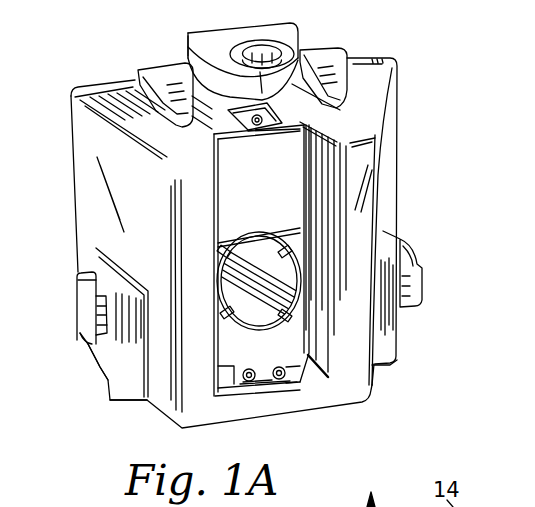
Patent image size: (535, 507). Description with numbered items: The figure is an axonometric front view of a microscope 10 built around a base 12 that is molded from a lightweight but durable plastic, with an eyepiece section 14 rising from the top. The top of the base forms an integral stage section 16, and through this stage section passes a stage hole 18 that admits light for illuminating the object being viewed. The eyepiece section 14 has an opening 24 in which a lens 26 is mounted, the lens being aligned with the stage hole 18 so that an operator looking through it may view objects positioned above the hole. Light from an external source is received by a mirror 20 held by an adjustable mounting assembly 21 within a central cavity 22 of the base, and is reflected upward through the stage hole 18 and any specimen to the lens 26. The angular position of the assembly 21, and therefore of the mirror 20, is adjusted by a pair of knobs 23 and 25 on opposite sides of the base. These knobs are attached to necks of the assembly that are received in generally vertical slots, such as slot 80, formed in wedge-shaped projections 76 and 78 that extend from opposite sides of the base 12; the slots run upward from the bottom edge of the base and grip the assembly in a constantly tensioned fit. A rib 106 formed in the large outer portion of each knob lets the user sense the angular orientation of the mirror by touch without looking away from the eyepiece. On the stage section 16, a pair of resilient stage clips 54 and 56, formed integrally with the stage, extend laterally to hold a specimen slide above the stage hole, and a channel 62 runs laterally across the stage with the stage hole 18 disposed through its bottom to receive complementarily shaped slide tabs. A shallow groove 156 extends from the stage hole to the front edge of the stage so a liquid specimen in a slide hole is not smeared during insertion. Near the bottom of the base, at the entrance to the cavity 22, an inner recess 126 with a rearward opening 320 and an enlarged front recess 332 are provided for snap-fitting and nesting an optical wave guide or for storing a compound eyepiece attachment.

The microscope 10 is at (91, 18).
The base 12 is at (399, 74).
The eyepiece section 14 is at (301, 30).
The stage section 16 is at (377, 106).
The stage hole 18 is at (270, 134).
The mirror 20 is at (254, 248).
The assembly 21 is at (279, 233).
The central cavity 22 is at (207, 163).
The knob 23 is at (75, 277).
The opening 24 is at (262, 44).
The knob 25 is at (408, 243).
The lens 26 is at (188, 44).
The resilient stage clip 54 is at (143, 64).
The resilient stage clip 56 is at (341, 52).
The channel 62 is at (355, 123).
The wedge-shaped projection 76 is at (110, 401).
The wedge-shaped projection 78 is at (397, 359).
The vertical slot 80 is at (108, 378).
The rib 106 is at (83, 312).
The inner recess 126 is at (260, 376).
The shallow groove 156 is at (249, 136).
The rearward opening 320 is at (277, 390).
The enlarged front recess 332 is at (297, 382).